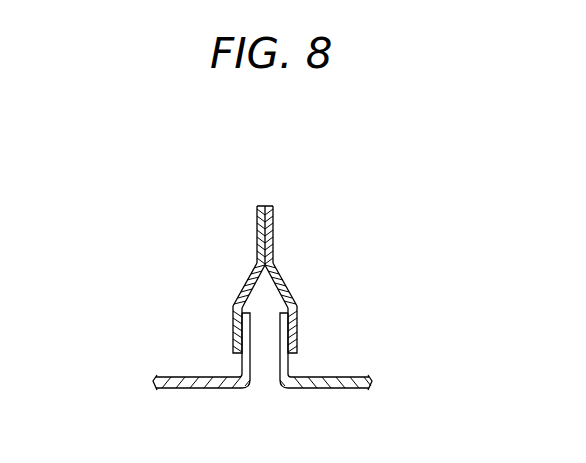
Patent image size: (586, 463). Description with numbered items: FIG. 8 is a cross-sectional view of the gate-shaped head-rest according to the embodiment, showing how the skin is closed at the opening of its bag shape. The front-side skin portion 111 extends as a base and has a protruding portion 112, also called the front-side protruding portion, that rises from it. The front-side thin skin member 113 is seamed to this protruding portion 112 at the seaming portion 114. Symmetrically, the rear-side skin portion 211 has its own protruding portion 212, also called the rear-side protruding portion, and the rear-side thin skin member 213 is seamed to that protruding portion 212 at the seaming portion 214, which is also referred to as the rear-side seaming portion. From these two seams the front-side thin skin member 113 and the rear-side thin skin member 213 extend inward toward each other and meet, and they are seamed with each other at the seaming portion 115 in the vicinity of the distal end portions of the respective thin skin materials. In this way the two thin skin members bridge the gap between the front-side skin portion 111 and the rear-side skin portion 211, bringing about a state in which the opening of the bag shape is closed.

The front-side skin portion 111 is at (330, 390).
The protruding portion 112 is at (296, 292).
The front-side thin skin member 113 is at (289, 277).
The seaming portion 114 is at (272, 333).
The seaming portion 115 is at (243, 231).
The rear-side skin portion 211 is at (193, 390).
The protruding portion 212 is at (240, 297).
The rear-side thin skin member 213 is at (248, 283).
The seaming portion 214 is at (258, 333).